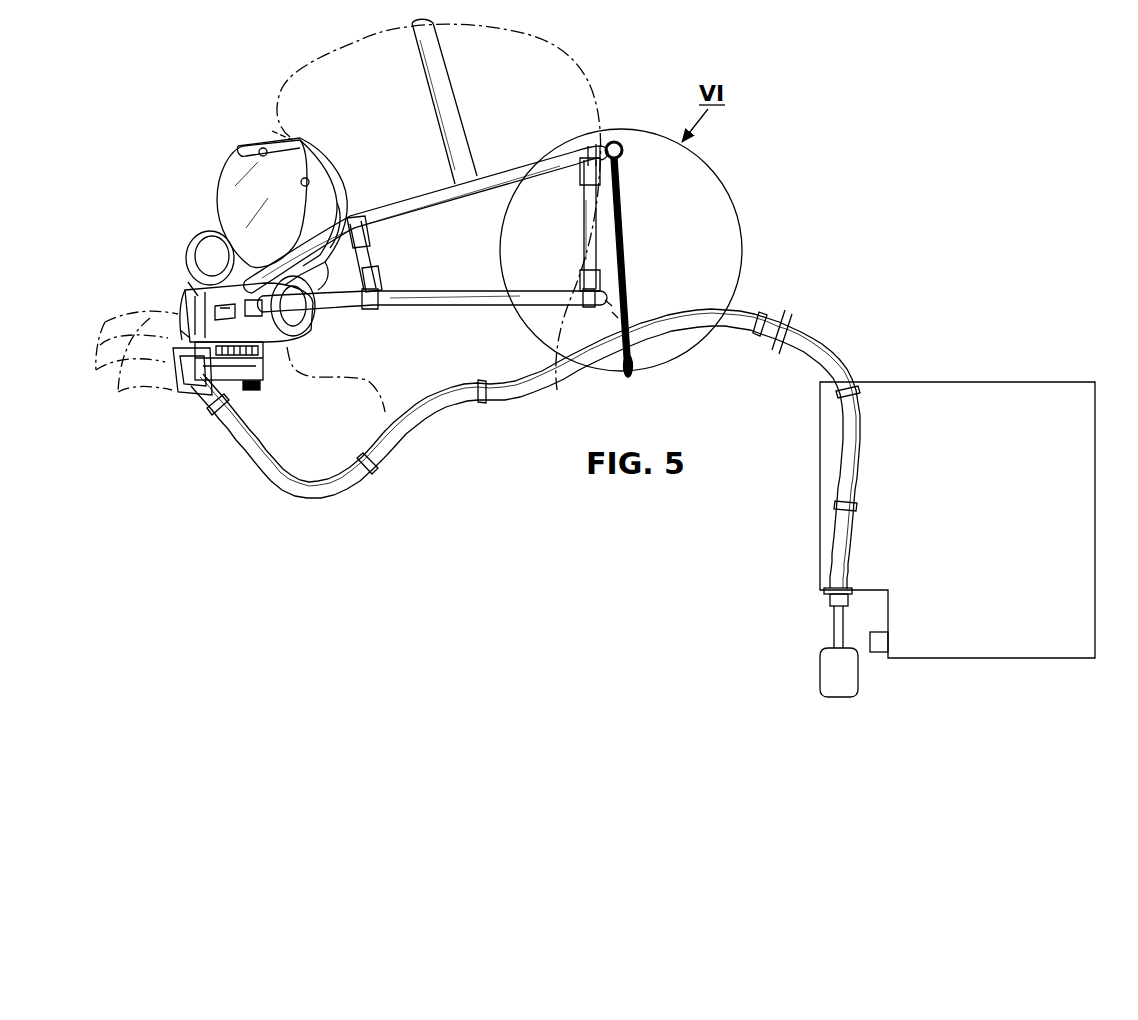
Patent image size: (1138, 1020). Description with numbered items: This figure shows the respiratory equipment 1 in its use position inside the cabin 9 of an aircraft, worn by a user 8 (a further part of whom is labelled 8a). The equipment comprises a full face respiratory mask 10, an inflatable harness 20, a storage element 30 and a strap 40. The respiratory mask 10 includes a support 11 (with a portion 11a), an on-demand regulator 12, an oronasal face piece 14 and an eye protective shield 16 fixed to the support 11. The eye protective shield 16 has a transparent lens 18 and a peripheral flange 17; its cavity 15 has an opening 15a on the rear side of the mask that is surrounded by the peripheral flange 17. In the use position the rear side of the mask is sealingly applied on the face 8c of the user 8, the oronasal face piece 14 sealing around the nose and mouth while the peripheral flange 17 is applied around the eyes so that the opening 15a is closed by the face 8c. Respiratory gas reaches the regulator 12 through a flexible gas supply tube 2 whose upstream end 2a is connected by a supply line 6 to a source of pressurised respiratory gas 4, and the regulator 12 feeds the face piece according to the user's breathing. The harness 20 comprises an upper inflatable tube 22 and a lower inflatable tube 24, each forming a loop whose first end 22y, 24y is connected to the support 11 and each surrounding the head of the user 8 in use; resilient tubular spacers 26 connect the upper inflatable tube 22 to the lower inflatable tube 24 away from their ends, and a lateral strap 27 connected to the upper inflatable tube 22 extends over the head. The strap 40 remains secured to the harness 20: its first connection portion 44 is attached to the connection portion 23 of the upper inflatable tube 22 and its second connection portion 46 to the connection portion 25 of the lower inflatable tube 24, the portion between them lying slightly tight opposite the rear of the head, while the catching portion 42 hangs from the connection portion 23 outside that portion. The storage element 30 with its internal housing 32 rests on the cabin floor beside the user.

The respiratory equipment 1 is at (255, 104).
The gas supply tube 2 is at (438, 403).
The upstream end 2a is at (822, 586).
The source of pressurised respiratory gas 4 is at (832, 674).
The supply line 6 is at (836, 626).
The user 8 is at (586, 86).
The user's hand 8a is at (150, 380).
The face 8c is at (288, 138).
The cabin 9 is at (300, 57).
The respiratory mask 10 is at (186, 246).
The support 11 is at (244, 314).
The handle 11a is at (196, 398).
The on-demand regulator 12 is at (235, 386).
The oronasal face piece 14 is at (320, 328).
The cavity 15 is at (232, 218).
The opening 15a is at (336, 158).
The eye protective shield 16 is at (229, 197).
The peripheral flange 17 is at (348, 184).
The transparent lens 18 is at (240, 170).
The inflatable harness 20 is at (454, 233).
The upper inflatable tube 22 is at (510, 162).
The first end 22y is at (190, 286).
The connection portion 23 is at (606, 145).
The lower inflatable tube 24 is at (497, 305).
The first end 24y is at (186, 332).
The connection portion 25 is at (604, 306).
The spacer 26 is at (376, 258).
The lateral strap 27 is at (440, 72).
The storage element 30 is at (977, 543).
The internal housing 32 is at (969, 449).
The strap 40 is at (622, 252).
The catching portion 42 is at (633, 372).
The first connection portion 44 is at (622, 146).
The second connection portion 46 is at (616, 318).